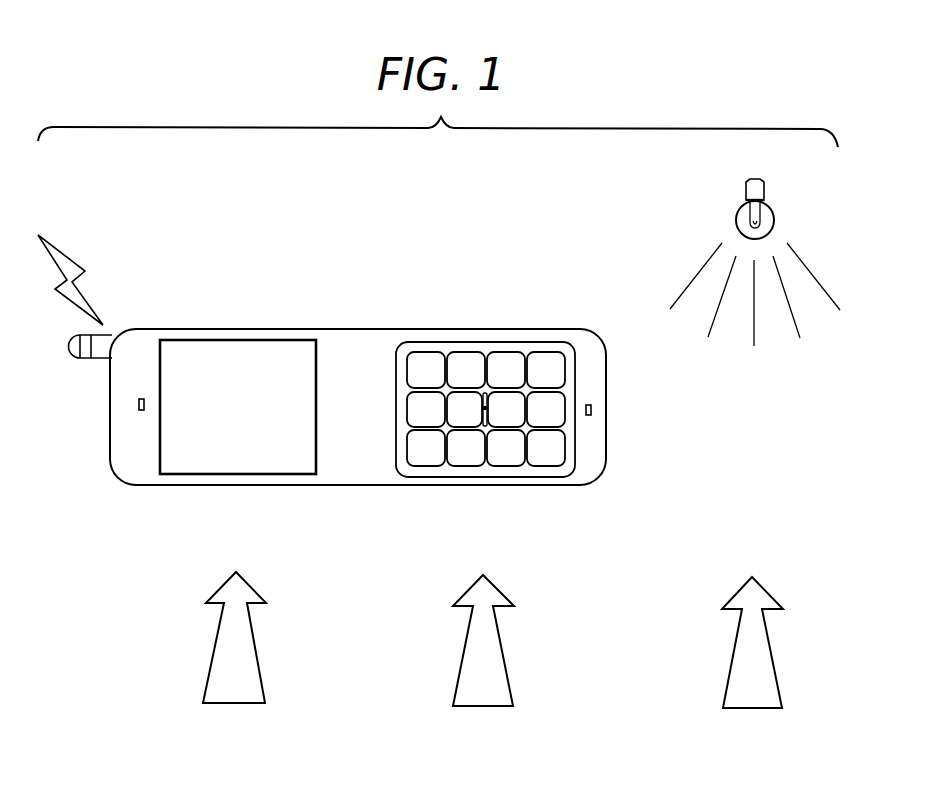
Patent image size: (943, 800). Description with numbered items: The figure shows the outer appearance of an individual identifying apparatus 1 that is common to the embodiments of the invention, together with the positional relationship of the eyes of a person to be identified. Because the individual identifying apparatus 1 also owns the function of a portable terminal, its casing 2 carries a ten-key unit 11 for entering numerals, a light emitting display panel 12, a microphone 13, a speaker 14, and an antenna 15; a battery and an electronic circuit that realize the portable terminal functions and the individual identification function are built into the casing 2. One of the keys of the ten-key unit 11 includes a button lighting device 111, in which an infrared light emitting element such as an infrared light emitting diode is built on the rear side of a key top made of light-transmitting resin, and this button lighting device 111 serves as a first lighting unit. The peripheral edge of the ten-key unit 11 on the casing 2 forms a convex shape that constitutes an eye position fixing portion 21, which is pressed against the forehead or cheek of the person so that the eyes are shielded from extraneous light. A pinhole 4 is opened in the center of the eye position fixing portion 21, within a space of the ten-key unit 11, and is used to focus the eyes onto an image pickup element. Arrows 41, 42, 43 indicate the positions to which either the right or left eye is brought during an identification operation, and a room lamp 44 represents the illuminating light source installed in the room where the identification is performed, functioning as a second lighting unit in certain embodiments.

The individual identifying apparatus 1 is at (330, 487).
The casing 2 is at (356, 330).
The pinhole 4 is at (484, 407).
The ten-key unit 11 is at (505, 466).
The button lighting device 111 is at (427, 460).
The light emitting display panel 12 is at (243, 350).
The microphone 13 is at (591, 410).
The speaker 14 is at (138, 405).
The antenna 15 is at (97, 359).
The eye position fixing portion 21 is at (513, 347).
The arrow 41 is at (257, 651).
The arrow 42 is at (507, 655).
The arrow 43 is at (775, 658).
The room lamp 44 is at (766, 190).